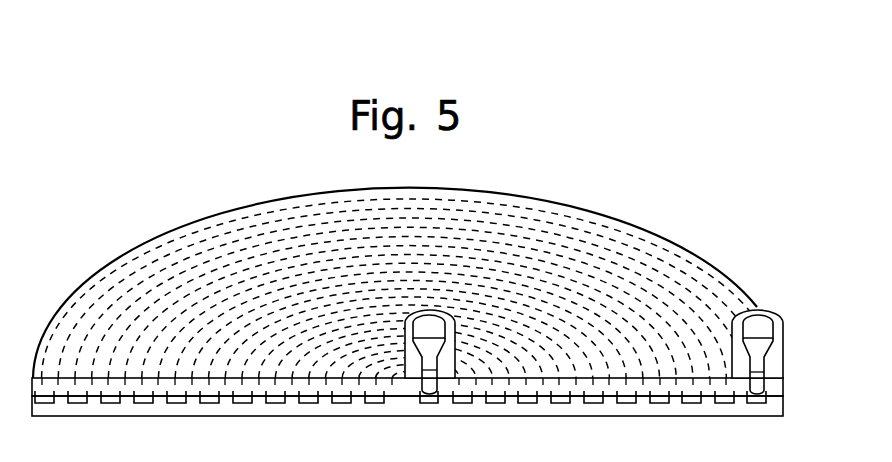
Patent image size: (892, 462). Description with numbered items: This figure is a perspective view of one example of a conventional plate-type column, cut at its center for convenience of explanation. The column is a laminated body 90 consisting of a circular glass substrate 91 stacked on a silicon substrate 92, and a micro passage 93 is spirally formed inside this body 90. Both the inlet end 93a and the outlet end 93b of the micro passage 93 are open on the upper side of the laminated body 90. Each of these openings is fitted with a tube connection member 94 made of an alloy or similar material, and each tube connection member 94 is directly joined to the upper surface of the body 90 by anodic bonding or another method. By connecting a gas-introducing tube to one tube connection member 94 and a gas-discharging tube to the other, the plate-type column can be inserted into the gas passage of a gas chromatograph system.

The laminated body 90 is at (91, 242).
The circular glass substrate 91 is at (785, 385).
The silicon substrate 92 is at (785, 404).
The micro passage 93 is at (143, 399).
The inlet end 93a is at (430, 403).
The outlet end 93b is at (757, 403).
The tube connection member 94 is at (742, 308).